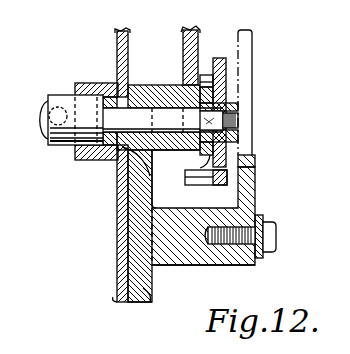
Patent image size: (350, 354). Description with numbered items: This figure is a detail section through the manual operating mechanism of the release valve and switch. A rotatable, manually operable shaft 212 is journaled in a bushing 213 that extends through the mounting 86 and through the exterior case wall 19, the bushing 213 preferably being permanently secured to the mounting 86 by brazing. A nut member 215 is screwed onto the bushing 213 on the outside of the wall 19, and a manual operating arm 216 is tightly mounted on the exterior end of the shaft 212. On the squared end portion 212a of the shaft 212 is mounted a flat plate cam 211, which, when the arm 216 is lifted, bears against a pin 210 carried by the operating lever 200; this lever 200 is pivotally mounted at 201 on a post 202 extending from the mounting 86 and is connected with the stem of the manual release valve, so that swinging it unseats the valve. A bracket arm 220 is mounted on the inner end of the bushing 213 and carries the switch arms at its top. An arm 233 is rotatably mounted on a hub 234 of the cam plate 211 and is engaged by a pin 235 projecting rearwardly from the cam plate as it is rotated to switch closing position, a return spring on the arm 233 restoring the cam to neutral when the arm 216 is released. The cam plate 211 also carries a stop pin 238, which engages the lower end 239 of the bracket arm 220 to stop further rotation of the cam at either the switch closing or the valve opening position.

The exterior case wall 19 is at (117, 40).
The nut member 215 is at (112, 82).
The manual operating arm 216 is at (48, 128).
The rotatable manually operable shaft 212 is at (166, 117).
The bushing 213 is at (119, 178).
The bracket arm 220 is at (183, 40).
The pin 235 is at (205, 75).
The flat plate cam 211 is at (219, 58).
The arm 233 is at (224, 99).
The pin 210 is at (242, 103).
The squared end portion 212a is at (253, 157).
The operating lever 200 is at (265, 194).
The pivot 201 is at (258, 240).
The post 202 is at (175, 266).
The mounting 86 is at (148, 294).
The hub 234 is at (208, 158).
The lower end of bracket arm 239 is at (185, 177).
The stop pin 238 is at (206, 185).